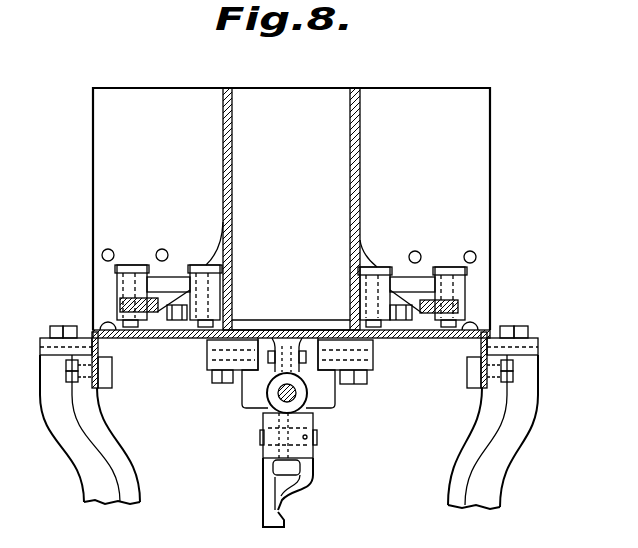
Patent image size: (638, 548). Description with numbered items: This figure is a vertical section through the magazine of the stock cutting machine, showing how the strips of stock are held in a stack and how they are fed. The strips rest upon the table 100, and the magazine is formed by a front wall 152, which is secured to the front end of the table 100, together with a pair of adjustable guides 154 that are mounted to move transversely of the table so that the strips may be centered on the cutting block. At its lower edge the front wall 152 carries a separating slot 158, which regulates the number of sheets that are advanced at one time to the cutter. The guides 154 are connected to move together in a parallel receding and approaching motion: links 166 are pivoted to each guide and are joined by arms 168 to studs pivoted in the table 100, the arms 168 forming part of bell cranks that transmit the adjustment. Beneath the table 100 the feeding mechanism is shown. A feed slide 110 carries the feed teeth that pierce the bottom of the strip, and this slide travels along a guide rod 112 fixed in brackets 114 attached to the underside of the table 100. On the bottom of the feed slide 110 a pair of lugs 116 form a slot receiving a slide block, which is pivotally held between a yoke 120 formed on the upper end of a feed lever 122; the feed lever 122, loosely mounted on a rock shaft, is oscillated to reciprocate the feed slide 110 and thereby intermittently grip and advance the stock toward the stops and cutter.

The table 100 is at (486, 333).
The feed slide 110 is at (268, 377).
The guide rod 112 is at (270, 397).
The brackets 114 is at (255, 412).
The lugs 116 is at (266, 443).
The yoke 120 is at (308, 462).
The feed lever 122 is at (284, 524).
The front wall 152 is at (298, 88).
The adjustable guides 154 is at (350, 183).
The separating slot 158 is at (297, 313).
The links 166 is at (162, 283).
The arms 168 is at (120, 303).